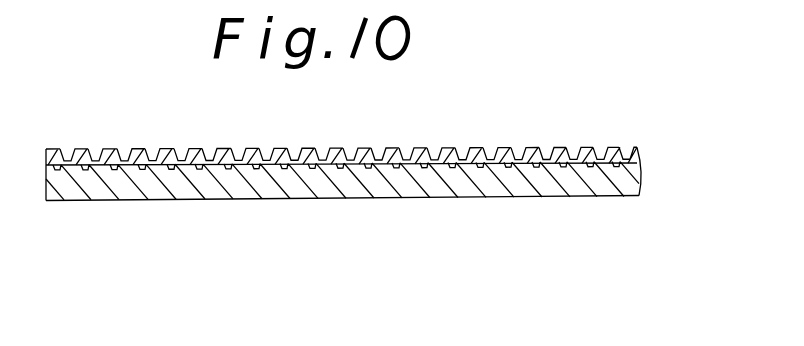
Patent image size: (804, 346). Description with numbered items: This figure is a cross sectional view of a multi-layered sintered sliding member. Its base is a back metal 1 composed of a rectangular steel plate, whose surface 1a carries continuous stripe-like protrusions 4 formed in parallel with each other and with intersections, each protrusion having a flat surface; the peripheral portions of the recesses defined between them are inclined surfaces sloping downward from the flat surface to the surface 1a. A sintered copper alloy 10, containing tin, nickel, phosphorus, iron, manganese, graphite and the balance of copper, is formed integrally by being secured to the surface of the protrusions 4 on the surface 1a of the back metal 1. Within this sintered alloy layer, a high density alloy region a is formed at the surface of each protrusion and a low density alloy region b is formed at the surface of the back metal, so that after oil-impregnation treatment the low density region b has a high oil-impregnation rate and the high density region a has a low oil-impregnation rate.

The back metal 1 is at (538, 216).
The surface of the back metal 1a is at (627, 148).
The sintered copper alloy 10 is at (137, 150).
The stripe-like protrusions 4 is at (513, 148).
The high density alloy region a is at (428, 148).
The low density alloy region b is at (372, 149).